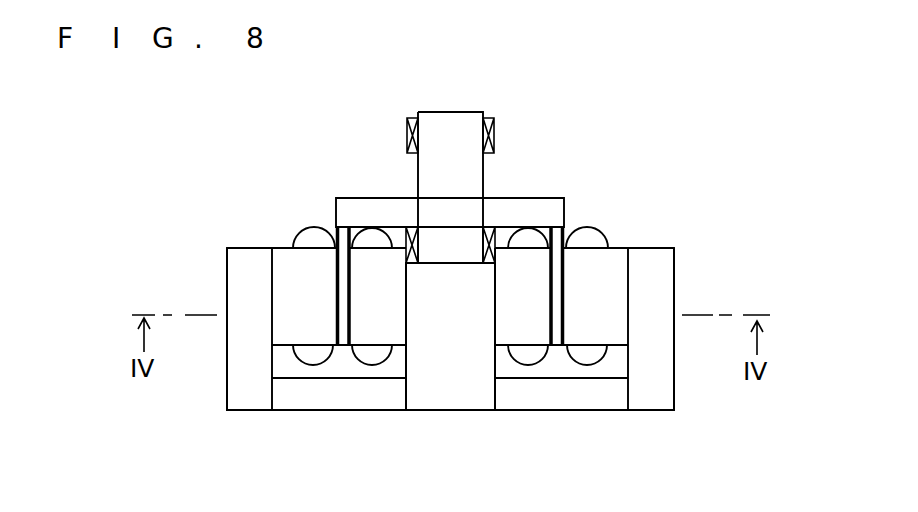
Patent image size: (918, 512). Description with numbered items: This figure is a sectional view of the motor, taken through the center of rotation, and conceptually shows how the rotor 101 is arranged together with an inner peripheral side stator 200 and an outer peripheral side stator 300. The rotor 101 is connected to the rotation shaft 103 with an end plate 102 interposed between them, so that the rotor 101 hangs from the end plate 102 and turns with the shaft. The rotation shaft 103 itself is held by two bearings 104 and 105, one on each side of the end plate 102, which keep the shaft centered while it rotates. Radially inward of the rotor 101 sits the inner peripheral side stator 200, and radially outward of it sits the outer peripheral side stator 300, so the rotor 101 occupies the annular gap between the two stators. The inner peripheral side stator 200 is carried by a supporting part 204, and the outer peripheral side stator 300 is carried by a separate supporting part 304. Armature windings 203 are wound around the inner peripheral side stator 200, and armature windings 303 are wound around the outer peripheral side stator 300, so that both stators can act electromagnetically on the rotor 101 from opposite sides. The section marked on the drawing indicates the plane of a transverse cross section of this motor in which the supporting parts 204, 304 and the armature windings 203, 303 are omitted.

The rotor 101 is at (557, 233).
The end plate 102 is at (542, 213).
The rotation shaft 103 is at (465, 118).
The bearing 104 is at (412, 245).
The bearing 105 is at (495, 133).
The inner peripheral side stator 200 is at (540, 268).
The armature winding 203 is at (535, 352).
The supporting part 204 is at (433, 375).
The outer peripheral side stator 300 is at (612, 276).
The armature winding 303 is at (590, 358).
The supporting part 304 is at (243, 270).